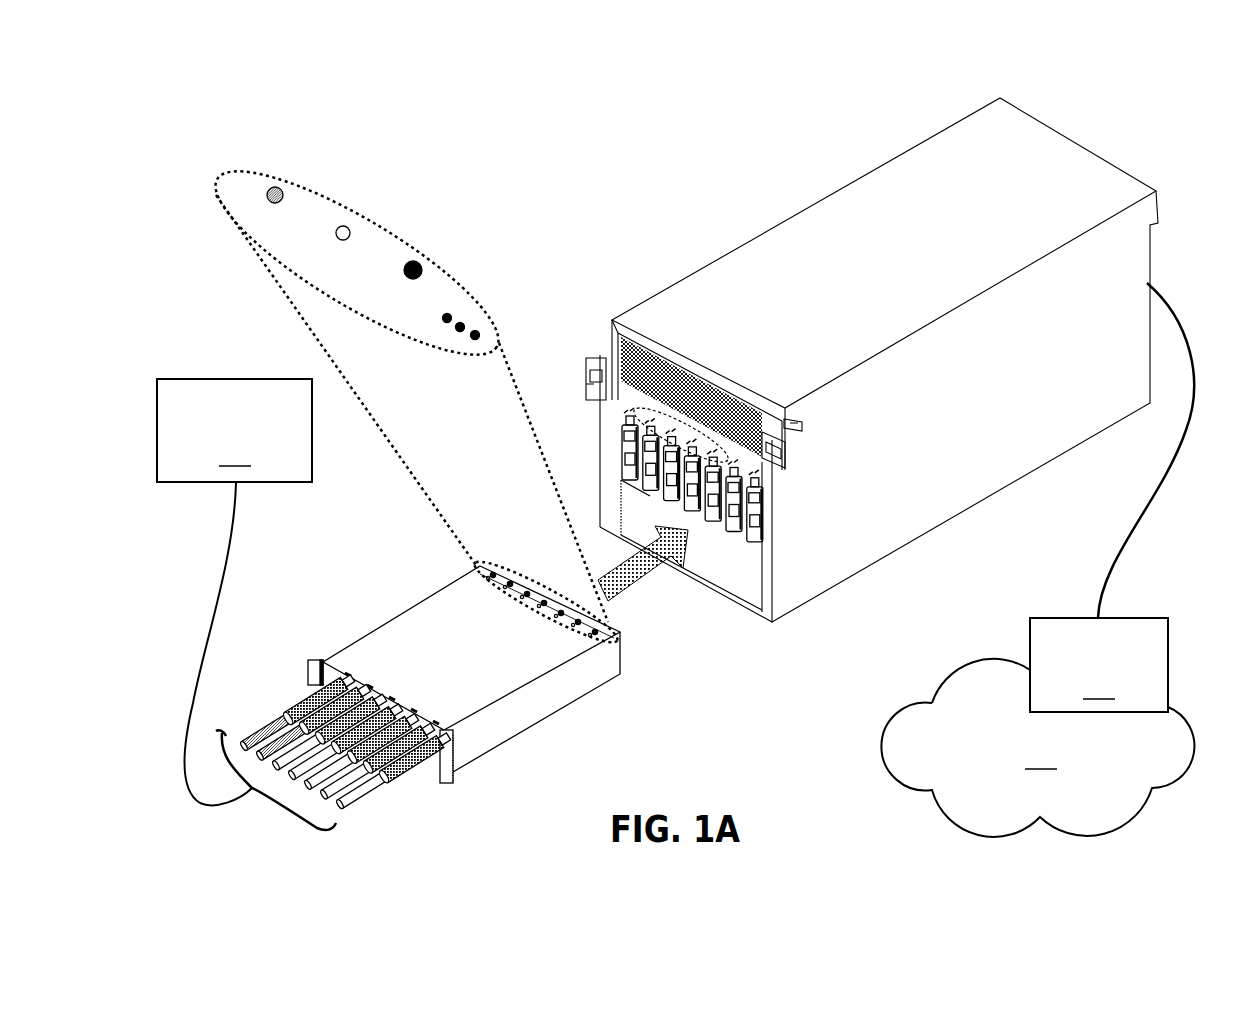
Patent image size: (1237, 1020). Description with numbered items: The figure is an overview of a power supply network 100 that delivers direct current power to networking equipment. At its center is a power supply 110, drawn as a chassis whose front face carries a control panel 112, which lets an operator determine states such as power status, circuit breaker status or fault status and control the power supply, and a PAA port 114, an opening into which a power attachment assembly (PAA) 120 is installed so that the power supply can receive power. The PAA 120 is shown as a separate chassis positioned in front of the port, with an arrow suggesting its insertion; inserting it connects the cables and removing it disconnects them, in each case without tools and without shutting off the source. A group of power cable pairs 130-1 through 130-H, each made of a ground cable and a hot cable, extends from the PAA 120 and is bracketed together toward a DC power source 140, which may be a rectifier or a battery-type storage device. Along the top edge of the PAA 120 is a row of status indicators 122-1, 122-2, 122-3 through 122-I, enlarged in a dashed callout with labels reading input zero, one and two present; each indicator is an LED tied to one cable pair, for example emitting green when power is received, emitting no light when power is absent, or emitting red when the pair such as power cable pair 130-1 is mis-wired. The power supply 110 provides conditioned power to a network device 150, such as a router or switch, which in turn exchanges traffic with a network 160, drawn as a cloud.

The power supply network 100 is at (258, 124).
The power supply 110 is at (834, 193).
The control panel 112 is at (620, 407).
The PAA port 114 is at (718, 560).
The power attachment assembly (PAA) 120 is at (420, 602).
The status indicator 122-1 is at (283, 186).
The status indicator 122-2 is at (350, 227).
The status indicator 122-3 is at (418, 264).
The status indicator 122-I is at (598, 633).
The power cable pair 130-1 is at (291, 708).
The power cable pair 130-H is at (372, 792).
The DC power source 140 is at (246, 604).
The network device 150 is at (1112, 497).
The network 160 is at (1037, 748).